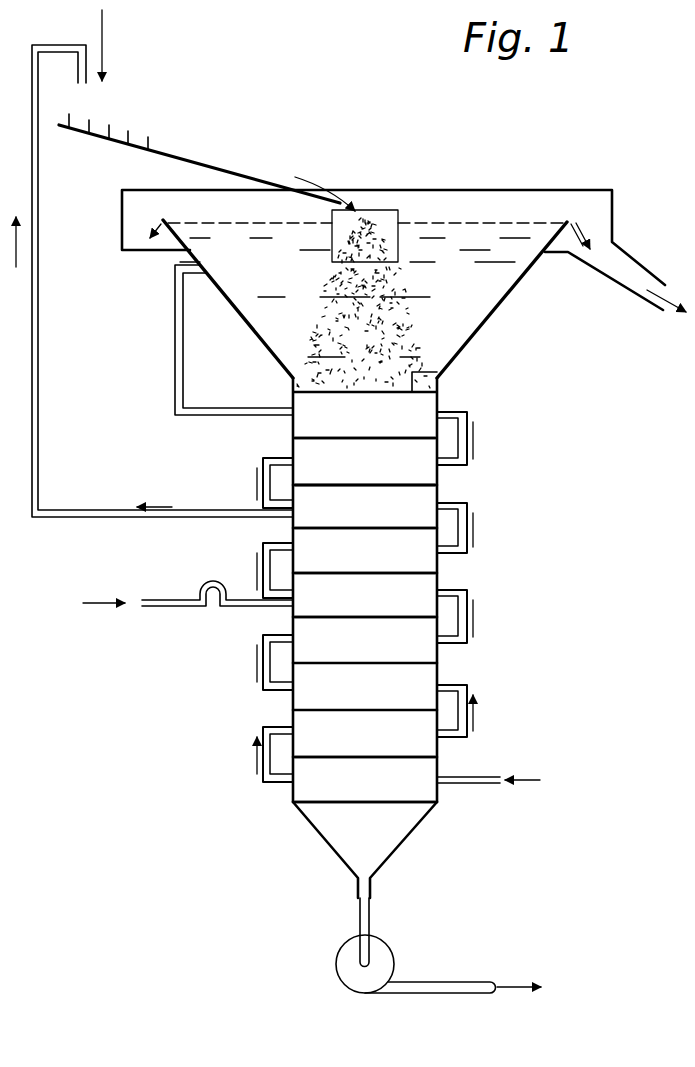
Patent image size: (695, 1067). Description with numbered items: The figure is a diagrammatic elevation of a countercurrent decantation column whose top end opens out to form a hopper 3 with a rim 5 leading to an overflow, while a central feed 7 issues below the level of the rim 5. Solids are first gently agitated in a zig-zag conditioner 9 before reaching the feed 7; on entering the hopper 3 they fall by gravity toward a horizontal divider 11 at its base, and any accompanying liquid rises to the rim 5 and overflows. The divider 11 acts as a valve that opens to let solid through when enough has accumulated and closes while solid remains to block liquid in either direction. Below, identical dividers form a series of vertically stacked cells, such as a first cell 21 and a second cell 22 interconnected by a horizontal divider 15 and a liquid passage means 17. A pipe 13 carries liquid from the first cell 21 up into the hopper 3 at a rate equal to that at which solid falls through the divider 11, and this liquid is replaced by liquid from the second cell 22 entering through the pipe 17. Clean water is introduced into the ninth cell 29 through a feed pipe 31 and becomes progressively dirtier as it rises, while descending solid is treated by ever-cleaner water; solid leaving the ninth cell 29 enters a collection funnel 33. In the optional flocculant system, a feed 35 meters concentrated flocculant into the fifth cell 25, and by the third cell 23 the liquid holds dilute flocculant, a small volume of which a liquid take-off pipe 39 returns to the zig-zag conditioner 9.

The hopper 3 is at (500, 303).
The rim 5 is at (122, 238).
The central feed 7 is at (388, 212).
The zig-zag conditioner 9 is at (187, 158).
The horizontal divider 11 is at (414, 372).
The pipe 13 is at (175, 298).
The horizontal divider 15 is at (318, 436).
The liquid passage means 17 is at (468, 412).
The first cell 21 is at (340, 410).
The second cell 22 is at (378, 474).
The third cell 23 is at (378, 519).
The fifth cell 25 is at (378, 612).
The ninth cell 29 is at (378, 789).
The feed pipe 31 is at (482, 777).
The collection funnel 33 is at (409, 836).
The feed 35 is at (217, 582).
The liquid take-off pipe 39 is at (195, 511).